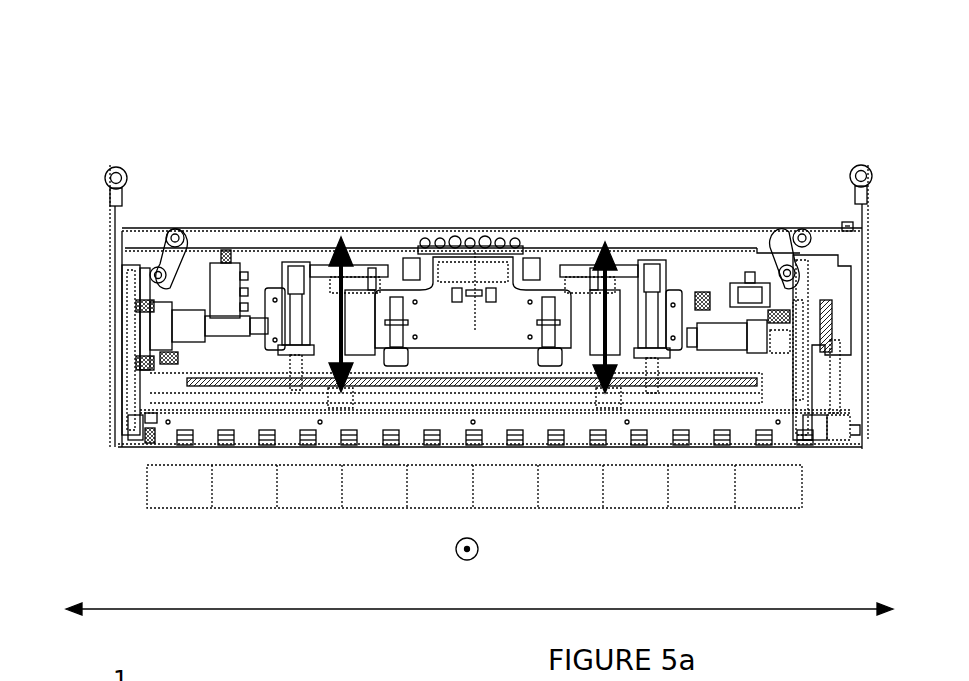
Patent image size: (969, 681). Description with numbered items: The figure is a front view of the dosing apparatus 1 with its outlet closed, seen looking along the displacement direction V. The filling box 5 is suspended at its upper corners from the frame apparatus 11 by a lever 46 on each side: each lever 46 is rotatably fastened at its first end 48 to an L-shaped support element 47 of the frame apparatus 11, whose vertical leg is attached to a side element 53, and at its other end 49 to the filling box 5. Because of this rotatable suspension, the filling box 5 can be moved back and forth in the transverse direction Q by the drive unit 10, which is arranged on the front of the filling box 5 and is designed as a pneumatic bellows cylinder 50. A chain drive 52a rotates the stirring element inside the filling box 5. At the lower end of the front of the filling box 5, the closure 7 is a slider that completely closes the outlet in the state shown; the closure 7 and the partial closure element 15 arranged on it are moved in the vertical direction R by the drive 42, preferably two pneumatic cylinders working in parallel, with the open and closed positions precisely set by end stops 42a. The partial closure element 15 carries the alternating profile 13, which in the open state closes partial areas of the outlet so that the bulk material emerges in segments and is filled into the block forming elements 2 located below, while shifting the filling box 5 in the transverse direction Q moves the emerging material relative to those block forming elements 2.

The dosing apparatus 1 is at (212, 89).
The block forming elements 2 is at (187, 508).
The filling box 5 is at (658, 228).
The closure 7 is at (137, 405).
The drive unit 10 is at (770, 340).
The frame apparatus 11 is at (866, 226).
The alternating profile 13 is at (215, 437).
The partial closure element 15 is at (160, 434).
The drive 42 is at (297, 310).
The end stops 42a is at (363, 277).
The lever 46 is at (166, 256).
The support element 47 is at (128, 238).
The first end of lever 48 is at (176, 233).
The other end of lever 49 is at (165, 254).
The pneumatic bellows cylinder 50 is at (133, 272).
The chain drive 52a is at (138, 388).
The side element 53 is at (173, 342).
The vertical direction R is at (348, 248).
The transverse direction Q is at (112, 608).
The displacement direction V is at (480, 549).